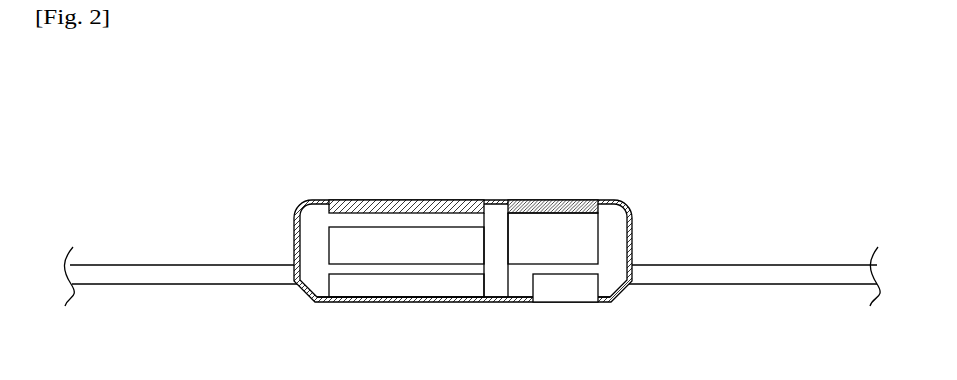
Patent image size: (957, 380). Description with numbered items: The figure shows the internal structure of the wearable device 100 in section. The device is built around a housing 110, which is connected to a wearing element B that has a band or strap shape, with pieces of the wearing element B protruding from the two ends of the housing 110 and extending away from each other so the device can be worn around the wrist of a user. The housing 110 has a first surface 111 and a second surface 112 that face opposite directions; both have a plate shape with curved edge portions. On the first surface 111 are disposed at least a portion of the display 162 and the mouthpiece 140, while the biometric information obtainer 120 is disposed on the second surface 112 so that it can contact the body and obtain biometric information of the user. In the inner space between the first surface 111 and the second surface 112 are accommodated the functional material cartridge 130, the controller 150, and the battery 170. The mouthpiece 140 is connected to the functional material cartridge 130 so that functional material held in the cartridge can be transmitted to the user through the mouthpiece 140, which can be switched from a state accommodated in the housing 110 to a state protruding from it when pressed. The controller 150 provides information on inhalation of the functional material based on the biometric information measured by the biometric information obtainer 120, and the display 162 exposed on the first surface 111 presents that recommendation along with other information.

The wearable device 100 is at (480, 100).
The housing 110 is at (318, 200).
The first surface 111 is at (497, 200).
The second surface 112 is at (467, 300).
The biometric information obtainer 120 is at (568, 292).
The functional material cartridge 130 is at (592, 238).
The mouthpiece 140 is at (552, 200).
The controller 150 is at (337, 238).
The display 162 is at (405, 203).
The battery 170 is at (372, 285).
The wearing element B is at (158, 273).